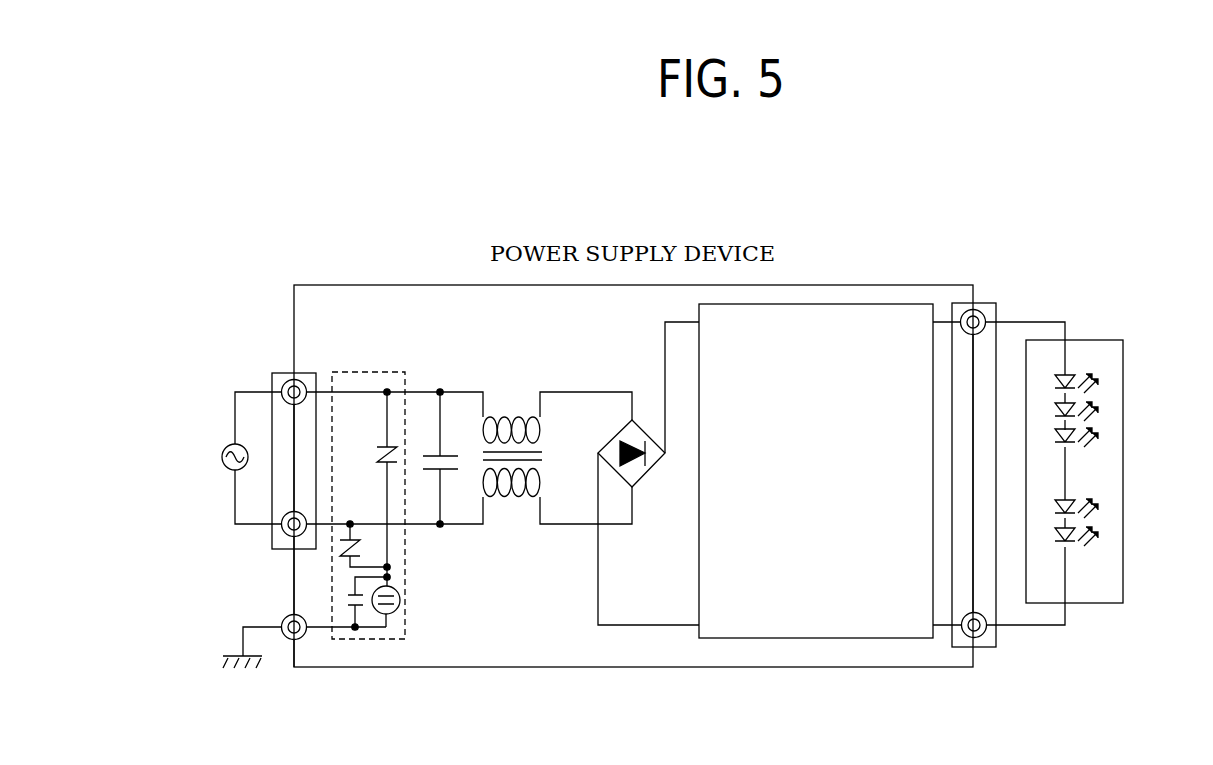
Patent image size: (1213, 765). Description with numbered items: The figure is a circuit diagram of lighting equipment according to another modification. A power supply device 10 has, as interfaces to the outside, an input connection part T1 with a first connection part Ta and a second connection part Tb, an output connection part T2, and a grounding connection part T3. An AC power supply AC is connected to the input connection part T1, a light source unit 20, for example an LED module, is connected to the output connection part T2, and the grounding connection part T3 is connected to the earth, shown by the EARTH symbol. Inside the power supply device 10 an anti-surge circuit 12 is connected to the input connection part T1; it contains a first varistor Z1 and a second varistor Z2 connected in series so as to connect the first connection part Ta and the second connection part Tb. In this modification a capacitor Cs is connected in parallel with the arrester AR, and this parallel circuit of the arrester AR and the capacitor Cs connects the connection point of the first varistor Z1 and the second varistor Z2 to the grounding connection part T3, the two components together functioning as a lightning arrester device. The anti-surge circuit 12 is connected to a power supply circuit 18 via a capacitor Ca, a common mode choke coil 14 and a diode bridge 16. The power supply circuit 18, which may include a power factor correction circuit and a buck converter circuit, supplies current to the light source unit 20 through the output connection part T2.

The power supply device 10 is at (417, 285).
The anti-surge circuit 12 is at (395, 640).
The common mode choke coil 14 is at (512, 510).
The diode bridge 16 is at (640, 485).
The power supply circuit 18 is at (840, 303).
The light source unit 20 is at (1123, 418).
The input connection part T1 is at (278, 372).
The output connection part T2 is at (978, 303).
The grounding connection part T3 is at (287, 640).
The first connection part Ta is at (287, 387).
The second connection part Tb is at (285, 533).
The first varistor Z1 is at (337, 545).
The second varistor Z2 is at (372, 452).
The capacitor Ca is at (448, 477).
The capacitor Cs is at (348, 600).
The arrester AR is at (400, 600).
The AC power supply AC is at (226, 448).
The earth EARTH is at (228, 670).